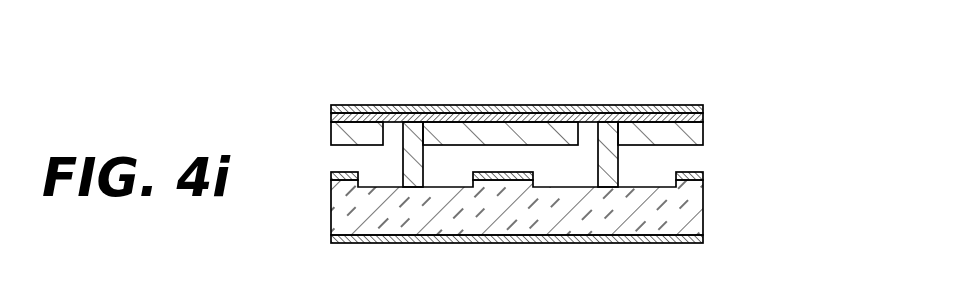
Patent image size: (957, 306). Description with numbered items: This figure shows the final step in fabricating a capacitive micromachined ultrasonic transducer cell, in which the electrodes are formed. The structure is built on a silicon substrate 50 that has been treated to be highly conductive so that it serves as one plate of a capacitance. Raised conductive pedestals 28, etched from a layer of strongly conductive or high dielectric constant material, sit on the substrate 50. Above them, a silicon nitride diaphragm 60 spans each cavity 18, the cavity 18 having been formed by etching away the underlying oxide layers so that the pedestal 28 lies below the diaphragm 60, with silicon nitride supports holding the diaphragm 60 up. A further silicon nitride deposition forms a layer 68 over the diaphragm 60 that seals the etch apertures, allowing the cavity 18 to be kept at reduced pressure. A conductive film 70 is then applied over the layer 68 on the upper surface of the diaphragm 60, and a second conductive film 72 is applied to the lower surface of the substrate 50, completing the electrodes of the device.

The conductive film 70 is at (705, 111).
The silicon nitride layer 68 is at (705, 117).
The silicon nitride diaphragm 60 is at (350, 133).
The cavity 18 is at (463, 176).
The pedestal 28 is at (337, 175).
The silicon substrate 50 is at (699, 204).
The conductive film 72 is at (705, 240).